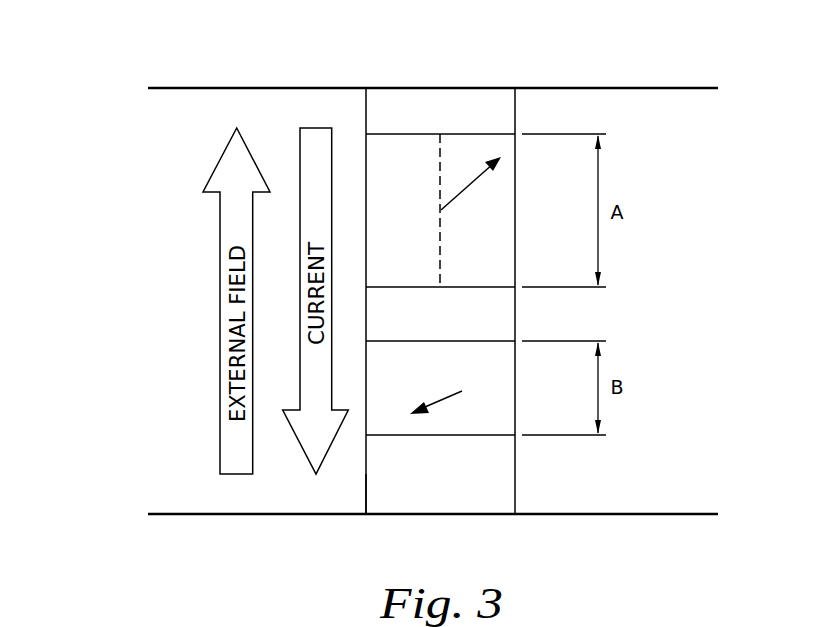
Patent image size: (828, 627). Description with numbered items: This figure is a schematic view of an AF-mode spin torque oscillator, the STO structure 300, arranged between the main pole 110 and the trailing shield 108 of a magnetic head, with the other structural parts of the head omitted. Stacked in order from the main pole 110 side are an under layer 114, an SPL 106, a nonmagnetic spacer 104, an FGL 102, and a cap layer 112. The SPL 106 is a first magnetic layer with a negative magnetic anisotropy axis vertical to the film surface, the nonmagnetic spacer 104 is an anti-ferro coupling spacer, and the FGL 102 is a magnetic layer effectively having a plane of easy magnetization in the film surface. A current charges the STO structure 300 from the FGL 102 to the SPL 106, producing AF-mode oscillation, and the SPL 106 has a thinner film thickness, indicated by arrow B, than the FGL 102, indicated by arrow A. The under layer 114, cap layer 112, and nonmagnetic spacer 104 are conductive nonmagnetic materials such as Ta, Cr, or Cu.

The STO structure 300 is at (133, 239).
The FGL 102 is at (389, 221).
The nonmagnetic spacer 104 is at (417, 317).
The SPL 106 is at (417, 377).
The trailing shield 108 is at (417, 71).
The main pole 110 is at (417, 551).
The cap layer 112 is at (417, 121).
The under layer 114 is at (417, 486).